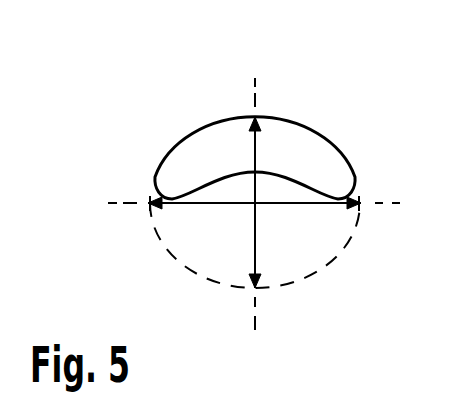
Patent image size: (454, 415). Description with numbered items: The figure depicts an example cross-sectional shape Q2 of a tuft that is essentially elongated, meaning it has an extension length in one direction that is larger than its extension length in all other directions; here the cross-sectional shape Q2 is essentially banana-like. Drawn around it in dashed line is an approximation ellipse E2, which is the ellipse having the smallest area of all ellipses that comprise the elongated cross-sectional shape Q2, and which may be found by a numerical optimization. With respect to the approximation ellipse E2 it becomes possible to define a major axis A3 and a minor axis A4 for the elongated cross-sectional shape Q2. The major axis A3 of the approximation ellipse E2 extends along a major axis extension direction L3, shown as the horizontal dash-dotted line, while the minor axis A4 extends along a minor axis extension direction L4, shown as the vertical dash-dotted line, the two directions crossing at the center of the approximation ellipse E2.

The cross-sectional shape Q2 is at (205, 147).
The minor axis extension direction L4 is at (256, 98).
The major axis extension direction L3 is at (130, 202).
The major axis A3 is at (313, 205).
The minor axis A4 is at (254, 249).
The approximation ellipse E2 is at (312, 273).